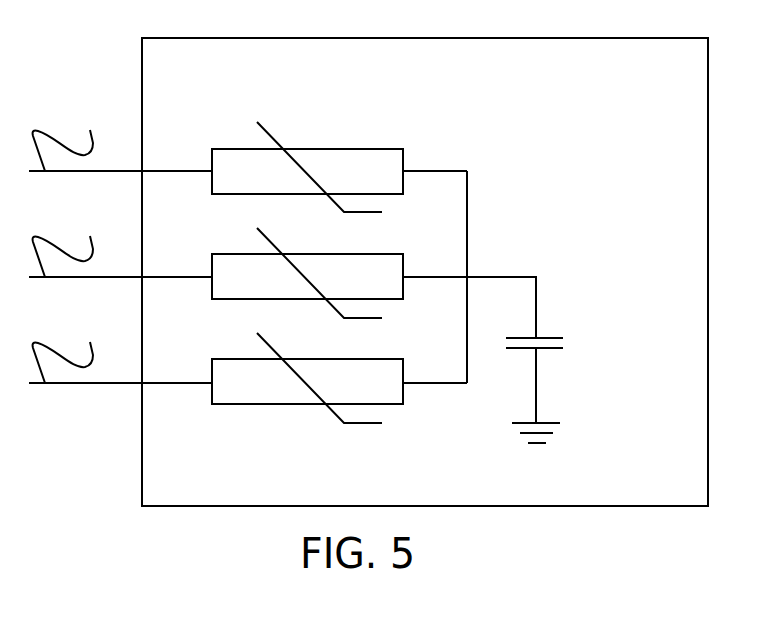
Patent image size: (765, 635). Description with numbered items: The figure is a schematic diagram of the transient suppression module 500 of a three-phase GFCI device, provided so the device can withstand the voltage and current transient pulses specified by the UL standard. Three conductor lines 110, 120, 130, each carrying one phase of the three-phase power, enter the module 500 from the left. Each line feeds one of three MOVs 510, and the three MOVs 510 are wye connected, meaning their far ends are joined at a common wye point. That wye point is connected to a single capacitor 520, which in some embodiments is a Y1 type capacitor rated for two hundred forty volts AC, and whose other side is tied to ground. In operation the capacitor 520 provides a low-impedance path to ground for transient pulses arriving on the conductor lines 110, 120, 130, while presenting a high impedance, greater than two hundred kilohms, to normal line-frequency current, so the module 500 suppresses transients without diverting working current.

The transient suppression module 500 is at (407, 72).
The conductor line 110 is at (120, 139).
The conductor line 120 is at (120, 245).
The conductor line 130 is at (120, 351).
The MOV 510 is at (374, 272).
The capacitor 520 is at (574, 326).